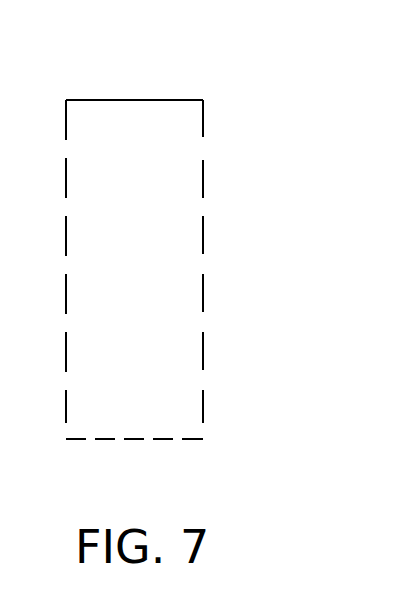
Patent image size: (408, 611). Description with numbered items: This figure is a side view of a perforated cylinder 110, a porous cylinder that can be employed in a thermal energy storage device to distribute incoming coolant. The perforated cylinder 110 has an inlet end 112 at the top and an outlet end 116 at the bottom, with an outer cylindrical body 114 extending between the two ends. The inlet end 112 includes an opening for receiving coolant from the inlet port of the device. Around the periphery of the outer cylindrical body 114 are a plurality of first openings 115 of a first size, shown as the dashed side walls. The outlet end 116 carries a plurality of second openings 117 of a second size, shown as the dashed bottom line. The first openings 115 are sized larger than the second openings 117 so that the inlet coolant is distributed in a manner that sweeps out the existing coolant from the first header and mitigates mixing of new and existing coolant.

The perforated cylinder 110 is at (187, 262).
The inlet end 112 is at (137, 92).
The outer cylindrical body 114 is at (204, 175).
The first openings 115 is at (205, 265).
The outlet end 116 is at (157, 452).
The second openings 117 is at (118, 445).